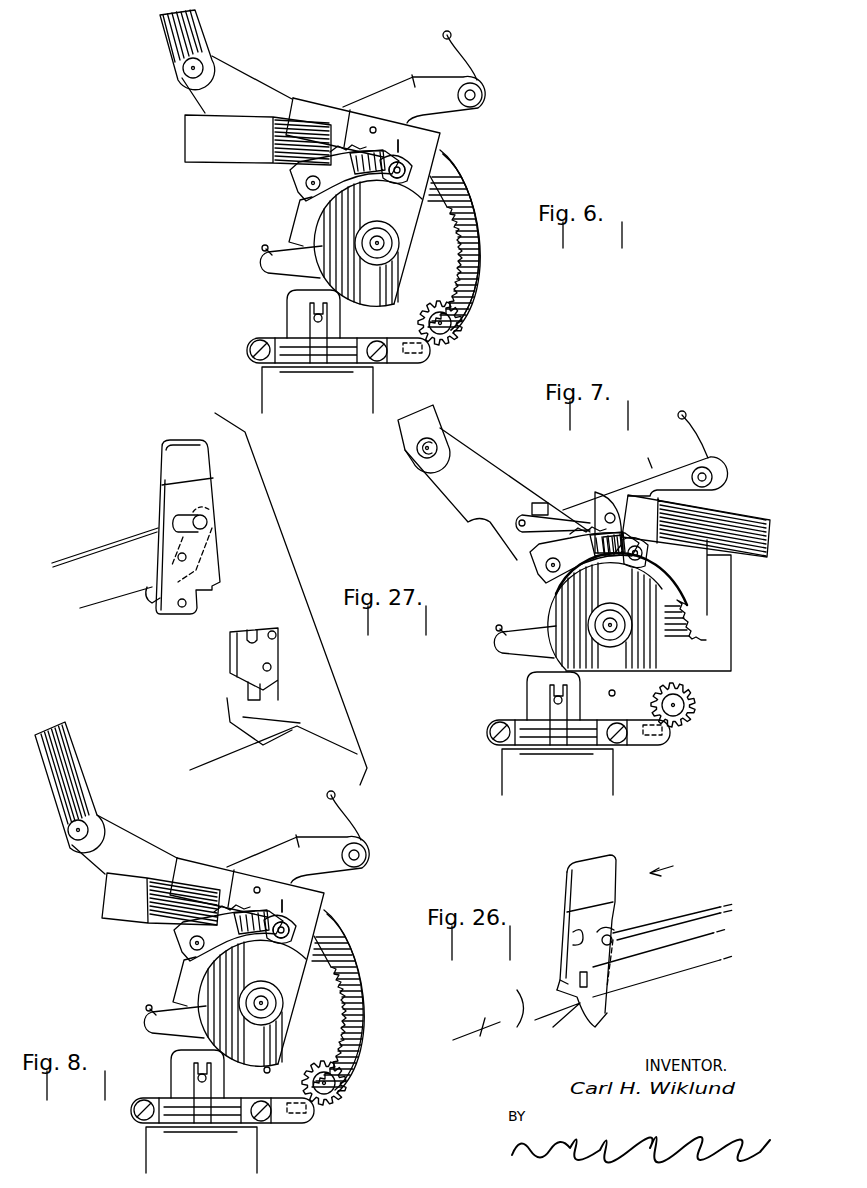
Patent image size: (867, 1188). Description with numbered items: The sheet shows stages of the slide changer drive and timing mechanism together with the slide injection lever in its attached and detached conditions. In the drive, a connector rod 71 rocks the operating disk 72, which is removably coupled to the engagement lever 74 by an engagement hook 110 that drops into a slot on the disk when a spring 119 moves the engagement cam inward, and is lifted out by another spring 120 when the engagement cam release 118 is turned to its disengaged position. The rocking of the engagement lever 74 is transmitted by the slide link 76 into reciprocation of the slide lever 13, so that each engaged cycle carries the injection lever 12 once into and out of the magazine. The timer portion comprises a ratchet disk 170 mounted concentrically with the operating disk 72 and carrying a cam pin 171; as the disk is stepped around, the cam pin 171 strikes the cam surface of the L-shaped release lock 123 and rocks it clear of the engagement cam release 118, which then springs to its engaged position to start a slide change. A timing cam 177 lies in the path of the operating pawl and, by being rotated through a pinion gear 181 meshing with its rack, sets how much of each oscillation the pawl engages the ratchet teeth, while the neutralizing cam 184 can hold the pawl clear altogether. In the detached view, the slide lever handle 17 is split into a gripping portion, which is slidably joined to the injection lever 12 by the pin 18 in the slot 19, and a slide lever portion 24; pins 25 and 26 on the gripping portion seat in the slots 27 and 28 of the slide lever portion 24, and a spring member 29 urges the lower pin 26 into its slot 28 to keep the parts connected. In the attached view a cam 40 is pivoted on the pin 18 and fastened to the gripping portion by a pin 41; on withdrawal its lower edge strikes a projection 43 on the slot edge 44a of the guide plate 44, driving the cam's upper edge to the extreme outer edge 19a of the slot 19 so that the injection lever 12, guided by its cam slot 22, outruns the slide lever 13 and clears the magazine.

In FIG. 6, the slide link 76 is at (196, 41).
In FIG. 7, the slide link 76 is at (428, 428).
In FIG. 8, the slide link 76 is at (82, 790).
In FIG. 6, the engagement lever 74 is at (265, 93).
In FIG. 7, the engagement lever 74 is at (512, 490).
In FIG. 8, the engagement lever 74 is at (148, 855).
In FIG. 6, the neutralizing cam 184 is at (430, 84).
In FIG. 7, the neutralizing cam 184 is at (658, 468).
In FIG. 8, the neutralizing cam 184 is at (313, 845).
In FIG. 6, the engagement hook 110 is at (383, 153).
In FIG. 7, the engagement hook 110 is at (607, 513).
In FIG. 8, the engagement hook 110 is at (267, 907).
In FIG. 6, the operating disk 72 is at (427, 177).
In FIG. 7, the operating disk 72 is at (717, 648).
In FIG. 8, the operating disk 72 is at (310, 940).
In FIG. 6, the timing cam 177 is at (478, 193).
In FIG. 6, the ratchet disk 170 is at (448, 255).
In FIG. 7, the ratchet disk 170 is at (682, 627).
In FIG. 8, the ratchet disk 170 is at (333, 1013).
In FIG. 6, the pinion gear 181 is at (462, 322).
In FIG. 7, the pinion gear 181 is at (689, 715).
In FIG. 8, the pinion gear 181 is at (347, 1083).
In FIG. 6, the release lock 123 is at (337, 350).
In FIG. 7, the release lock 123 is at (568, 737).
In FIG. 8, the release lock 123 is at (205, 1112).
In FIG. 6, the spring 120 is at (290, 173).
In FIG. 7, the spring 120 is at (530, 547).
In FIG. 8, the spring 120 is at (168, 938).
In FIG. 6, the engagement cam release 118 is at (287, 267).
In FIG. 7, the engagement cam release 118 is at (518, 647).
In FIG. 8, the engagement cam release 118 is at (167, 1010).
In FIG. 7, the connector rod 71 is at (723, 520).
In FIG. 7, the spring 119 is at (562, 515).
In FIG. 7, the cam pin 171 is at (616, 691).
In FIG. 8, the cam pin 171 is at (266, 1067).
In FIG. 27, the injection lever 12 is at (93, 563).
In FIG. 26, the injection lever 12 is at (673, 918).
In FIG. 27, the slide lever 13 is at (203, 497).
In FIG. 27, the pin 18 is at (207, 518).
In FIG. 26, the pin 18 is at (612, 938).
In FIG. 27, the slot 19 is at (177, 525).
In FIG. 27, the pin 25 is at (178, 557).
In FIG. 27, the pin 26 is at (187, 603).
In FIG. 27, the cam 40 is at (153, 593).
In FIG. 26, the cam 40 is at (567, 980).
In FIG. 27, the pin 41 is at (210, 560).
In FIG. 26, the pin 41 is at (573, 1000).
In FIG. 27, the slide lever portion 24 is at (273, 675).
In FIG. 27, the slot 27 is at (252, 630).
In FIG. 27, the slot 28 is at (230, 698).
In FIG. 27, the spring member 29 is at (263, 693).
In FIG. 26, the slide lever handle 17 is at (562, 955).
In FIG. 26, the extreme outer edge of slot 19a is at (565, 932).
In FIG. 26, the cam slot 22 is at (660, 945).
In FIG. 26, the projection 43 is at (512, 1025).
In FIG. 26, the guide plate 44 is at (480, 1035).
In FIG. 26, the slot edge 44a is at (499, 1006).